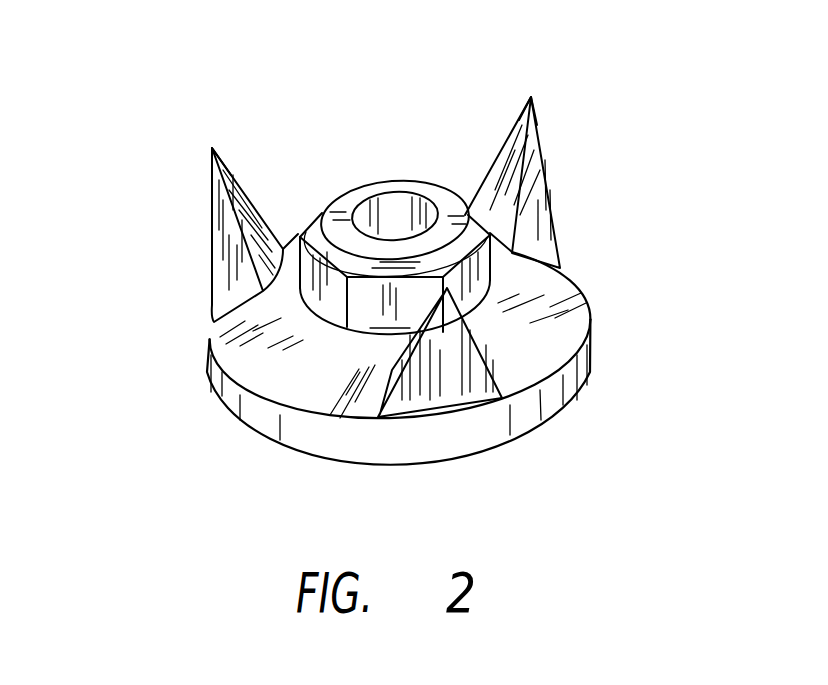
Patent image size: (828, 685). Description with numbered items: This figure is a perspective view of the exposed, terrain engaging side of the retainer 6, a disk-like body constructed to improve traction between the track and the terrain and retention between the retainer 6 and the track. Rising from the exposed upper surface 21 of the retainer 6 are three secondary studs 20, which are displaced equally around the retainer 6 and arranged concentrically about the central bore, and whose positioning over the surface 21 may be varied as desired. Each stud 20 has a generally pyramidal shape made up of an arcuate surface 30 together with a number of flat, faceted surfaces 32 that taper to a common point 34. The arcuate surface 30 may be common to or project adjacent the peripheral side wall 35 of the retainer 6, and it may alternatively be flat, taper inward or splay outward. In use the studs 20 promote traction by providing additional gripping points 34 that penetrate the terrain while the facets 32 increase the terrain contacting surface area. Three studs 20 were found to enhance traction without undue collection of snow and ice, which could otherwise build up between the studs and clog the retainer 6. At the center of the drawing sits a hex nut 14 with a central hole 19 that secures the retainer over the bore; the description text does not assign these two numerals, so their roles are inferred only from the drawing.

The retainer 6 is at (203, 359).
The nut 14 is at (352, 185).
The central bore 19 is at (413, 188).
The secondary studs 20 is at (208, 162).
The exposed upper surface 21 is at (563, 284).
The arcuate surface 30 is at (438, 398).
The faceted surfaces 32 is at (229, 243).
The common point 34 is at (212, 148).
The peripheral side wall 35 is at (585, 375).